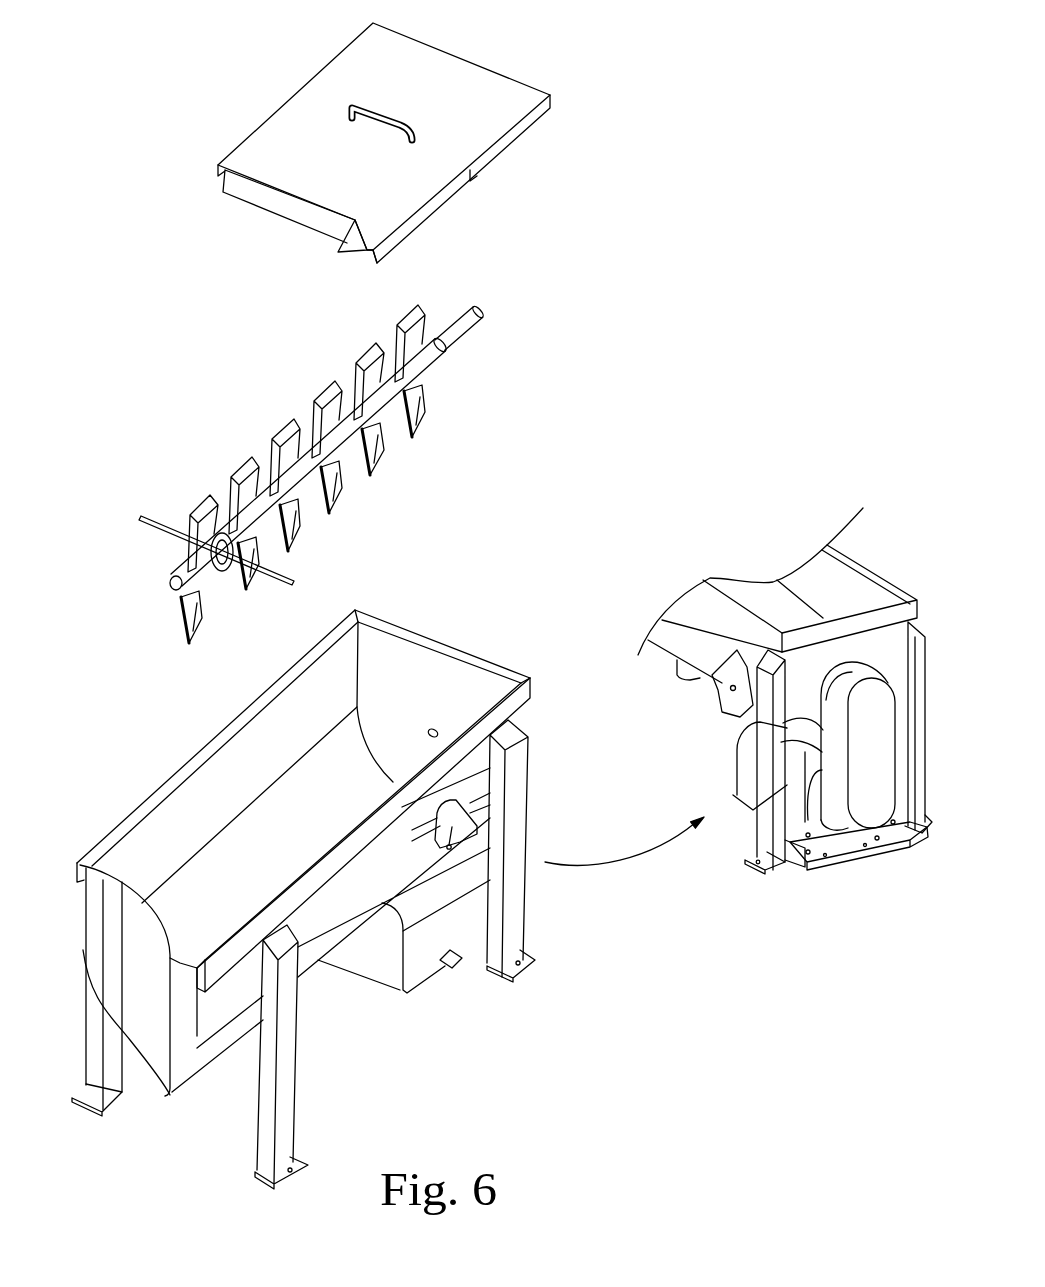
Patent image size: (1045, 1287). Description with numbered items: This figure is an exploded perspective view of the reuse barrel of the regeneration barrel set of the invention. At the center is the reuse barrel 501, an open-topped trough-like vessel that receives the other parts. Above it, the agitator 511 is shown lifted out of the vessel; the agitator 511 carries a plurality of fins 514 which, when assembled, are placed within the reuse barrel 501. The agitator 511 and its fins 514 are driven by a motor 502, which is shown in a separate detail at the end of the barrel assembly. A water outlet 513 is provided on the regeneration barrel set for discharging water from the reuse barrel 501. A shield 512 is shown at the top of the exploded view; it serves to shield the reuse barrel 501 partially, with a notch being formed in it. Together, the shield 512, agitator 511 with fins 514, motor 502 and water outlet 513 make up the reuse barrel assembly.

The reuse barrel 501 is at (303, 862).
The motor 502 is at (815, 803).
The agitator 511 is at (361, 474).
The shield 512 is at (488, 93).
The water outlet 513 is at (449, 849).
The fins 514 is at (423, 423).